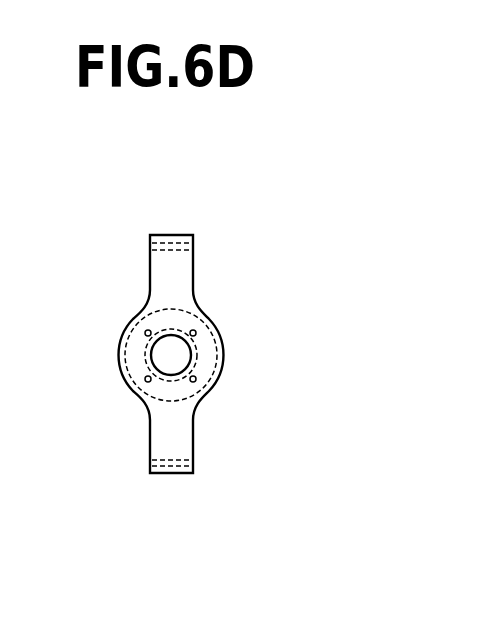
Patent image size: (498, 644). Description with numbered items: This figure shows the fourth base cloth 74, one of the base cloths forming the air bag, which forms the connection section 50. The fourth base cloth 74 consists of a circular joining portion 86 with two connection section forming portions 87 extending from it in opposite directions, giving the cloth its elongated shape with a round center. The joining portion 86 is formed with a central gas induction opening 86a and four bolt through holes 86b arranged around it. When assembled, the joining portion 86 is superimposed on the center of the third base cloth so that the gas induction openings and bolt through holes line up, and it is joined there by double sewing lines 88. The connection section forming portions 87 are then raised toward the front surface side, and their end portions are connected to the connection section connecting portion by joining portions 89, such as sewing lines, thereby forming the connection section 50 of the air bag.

The connection section 50 is at (203, 262).
The fourth base cloth 74 is at (140, 258).
The joining portion 86 is at (223, 358).
The gas induction opening 86a is at (197, 358).
The bolt through holes 86b is at (196, 331).
The connection section forming portions 87 is at (180, 285).
The double sewing lines 88 is at (151, 334).
The joining portions 89 is at (175, 240).